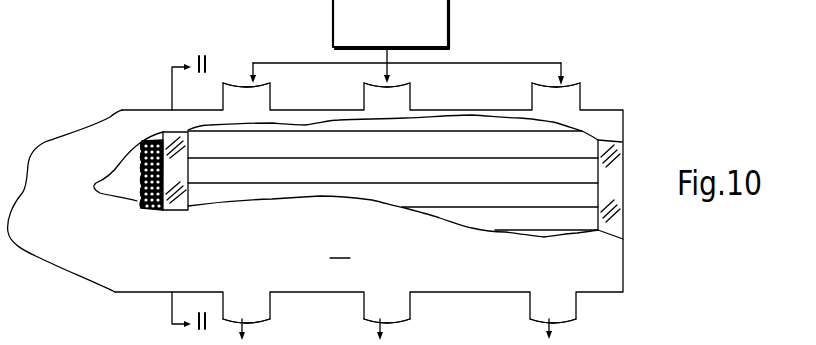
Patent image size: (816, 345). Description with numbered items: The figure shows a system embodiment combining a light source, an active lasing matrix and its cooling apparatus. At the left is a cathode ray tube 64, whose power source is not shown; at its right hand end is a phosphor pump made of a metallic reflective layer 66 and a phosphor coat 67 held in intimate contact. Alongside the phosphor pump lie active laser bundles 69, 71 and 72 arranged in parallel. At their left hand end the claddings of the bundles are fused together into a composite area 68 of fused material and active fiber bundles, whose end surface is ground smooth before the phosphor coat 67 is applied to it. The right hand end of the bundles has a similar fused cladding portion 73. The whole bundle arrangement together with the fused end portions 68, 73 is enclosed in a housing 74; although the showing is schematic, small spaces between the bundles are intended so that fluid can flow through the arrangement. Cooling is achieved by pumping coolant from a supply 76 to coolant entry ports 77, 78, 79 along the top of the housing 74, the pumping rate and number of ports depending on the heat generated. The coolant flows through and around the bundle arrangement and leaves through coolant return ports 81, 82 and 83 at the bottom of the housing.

The cathode ray tube 64 is at (78, 135).
The metallic reflective layer 66 is at (136, 200).
The phosphor coat 67 is at (155, 211).
The composite area of fused material 68 is at (178, 210).
The active laser bundle 69 is at (393, 144).
The active laser bundle 71 is at (393, 171).
The active laser bundle 72 is at (412, 206).
The fused cladding portion 73 is at (620, 165).
The housing 74 is at (358, 186).
The coolant supply 76 is at (447, 18).
The coolant entry port 77 is at (266, 84).
The coolant entry port 78 is at (410, 84).
The coolant entry port 79 is at (580, 84).
The coolant return port 81 is at (263, 319).
The coolant return port 82 is at (399, 317).
The coolant return port 83 is at (572, 315).